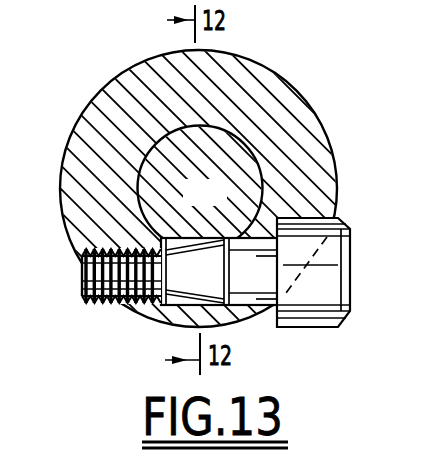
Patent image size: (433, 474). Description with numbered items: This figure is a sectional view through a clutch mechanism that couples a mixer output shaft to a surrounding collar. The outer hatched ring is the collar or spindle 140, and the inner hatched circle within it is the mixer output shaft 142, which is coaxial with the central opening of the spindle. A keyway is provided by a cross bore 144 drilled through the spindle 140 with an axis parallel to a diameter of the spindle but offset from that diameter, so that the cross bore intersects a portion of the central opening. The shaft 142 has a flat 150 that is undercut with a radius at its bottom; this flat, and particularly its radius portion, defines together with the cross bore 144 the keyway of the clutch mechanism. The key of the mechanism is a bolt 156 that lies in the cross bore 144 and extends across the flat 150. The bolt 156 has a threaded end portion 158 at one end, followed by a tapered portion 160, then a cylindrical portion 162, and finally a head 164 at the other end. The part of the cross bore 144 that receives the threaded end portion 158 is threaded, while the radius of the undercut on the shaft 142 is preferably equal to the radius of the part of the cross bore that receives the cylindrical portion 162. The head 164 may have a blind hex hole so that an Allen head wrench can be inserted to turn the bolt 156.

The collar or spindle 140 is at (123, 93).
The mixer output shaft 142 is at (152, 180).
The cross bore 144 is at (254, 232).
The flat 150 is at (177, 232).
The bolt 156 is at (82, 280).
The threaded end portion 158 is at (113, 303).
The tapered portion 160 is at (166, 310).
The cylindrical portion 162 is at (262, 305).
The head 164 is at (320, 294).